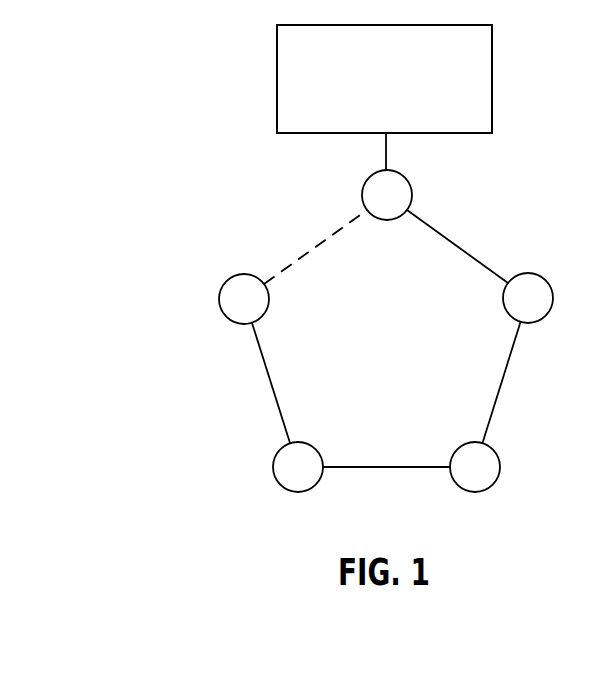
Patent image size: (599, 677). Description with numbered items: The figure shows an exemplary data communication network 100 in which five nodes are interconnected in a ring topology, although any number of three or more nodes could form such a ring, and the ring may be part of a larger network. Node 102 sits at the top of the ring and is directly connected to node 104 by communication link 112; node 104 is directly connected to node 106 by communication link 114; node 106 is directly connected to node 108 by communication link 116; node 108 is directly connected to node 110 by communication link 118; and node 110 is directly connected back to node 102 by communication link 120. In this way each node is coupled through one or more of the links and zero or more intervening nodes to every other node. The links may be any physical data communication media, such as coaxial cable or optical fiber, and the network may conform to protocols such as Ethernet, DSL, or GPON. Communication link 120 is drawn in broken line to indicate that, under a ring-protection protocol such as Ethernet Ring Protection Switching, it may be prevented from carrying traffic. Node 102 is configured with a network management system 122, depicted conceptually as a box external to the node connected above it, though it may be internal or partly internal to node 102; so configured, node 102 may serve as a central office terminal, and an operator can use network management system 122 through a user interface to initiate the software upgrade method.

The data communication network 100 is at (85, 146).
The node 102 is at (387, 220).
The node 104 is at (503, 303).
The node 106 is at (459, 446).
The node 108 is at (309, 443).
The node 110 is at (268, 305).
The communication link 112 is at (465, 248).
The communication link 114 is at (503, 384).
The communication link 116 is at (386, 467).
The communication link 118 is at (268, 383).
The communication link 120 is at (309, 251).
The network management system 122 is at (277, 88).